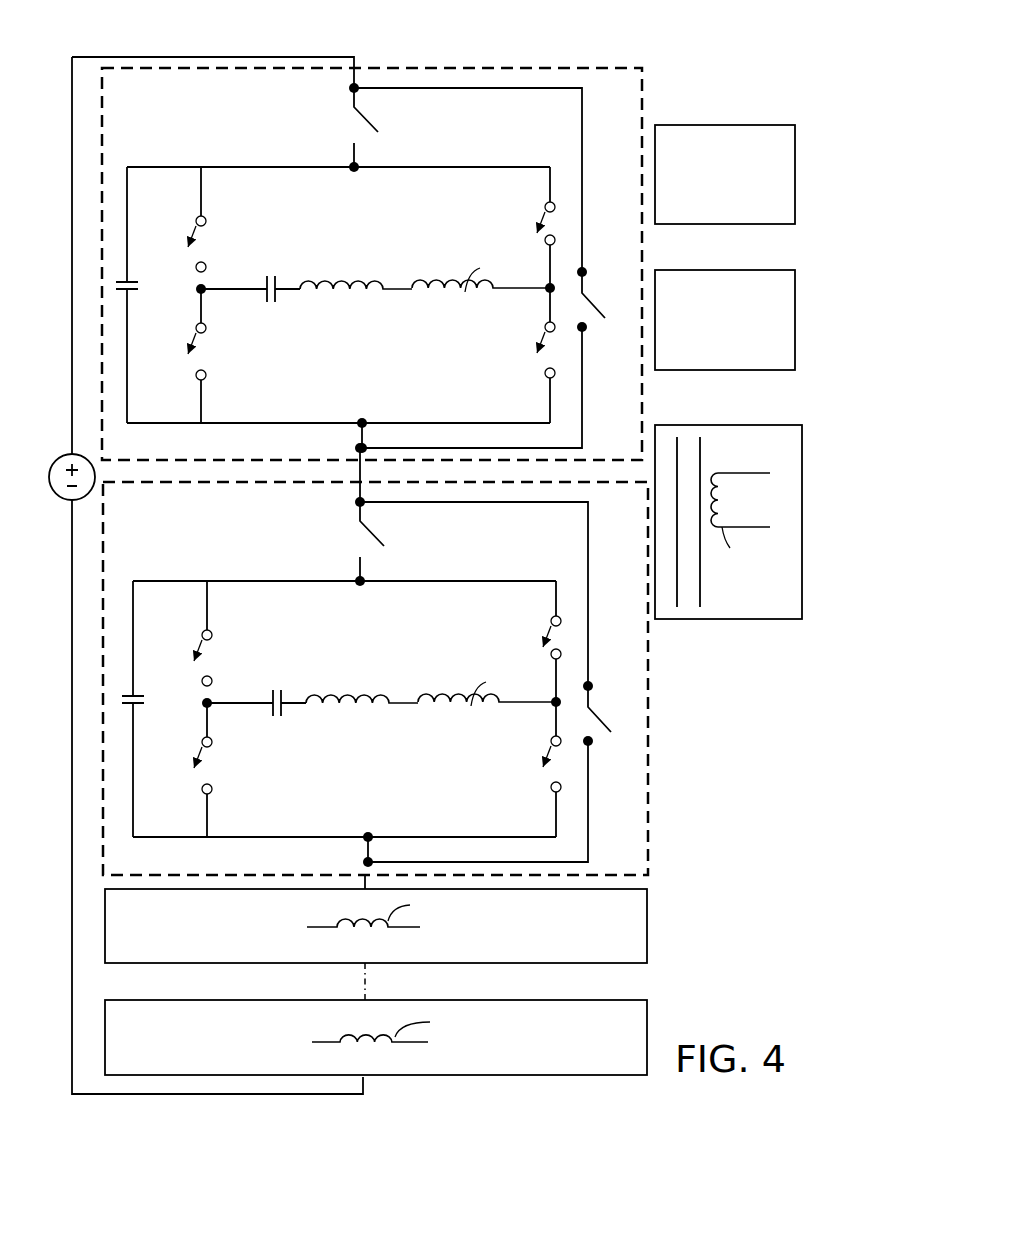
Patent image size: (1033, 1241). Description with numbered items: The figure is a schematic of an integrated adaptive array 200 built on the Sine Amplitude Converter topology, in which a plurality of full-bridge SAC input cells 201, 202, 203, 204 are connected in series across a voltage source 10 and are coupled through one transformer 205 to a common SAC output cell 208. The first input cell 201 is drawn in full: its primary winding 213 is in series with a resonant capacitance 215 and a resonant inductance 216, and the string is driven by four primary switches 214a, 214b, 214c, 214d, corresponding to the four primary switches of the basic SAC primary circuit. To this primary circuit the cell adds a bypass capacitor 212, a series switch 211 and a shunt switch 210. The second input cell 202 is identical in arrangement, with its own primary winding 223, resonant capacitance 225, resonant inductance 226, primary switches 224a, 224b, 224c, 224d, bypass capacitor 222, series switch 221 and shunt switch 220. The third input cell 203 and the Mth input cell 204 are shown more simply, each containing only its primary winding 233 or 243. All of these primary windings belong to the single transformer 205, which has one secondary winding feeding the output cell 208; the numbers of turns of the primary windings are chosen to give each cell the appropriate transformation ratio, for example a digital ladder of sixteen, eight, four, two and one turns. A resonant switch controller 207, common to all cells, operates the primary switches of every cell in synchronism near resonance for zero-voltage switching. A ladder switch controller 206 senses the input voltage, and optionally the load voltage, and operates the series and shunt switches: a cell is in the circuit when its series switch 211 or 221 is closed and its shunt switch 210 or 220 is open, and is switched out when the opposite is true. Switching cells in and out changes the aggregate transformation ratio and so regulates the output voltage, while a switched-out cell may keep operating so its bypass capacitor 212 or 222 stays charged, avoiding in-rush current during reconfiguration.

The voltage source 10 is at (56, 494).
The integrated adaptive array 200 is at (662, 38).
The full-bridge SAC input cell 201 is at (447, 67).
The full-bridge SAC input cell 202 is at (161, 483).
The full-bridge SAC input cell 203 is at (647, 912).
The full-bridge SAC input cell 204 is at (647, 1023).
The transformer 205 is at (686, 437).
The ladder switch controller 206 is at (722, 124).
The resonant switch controller 207 is at (722, 270).
The common SAC output cell 208 is at (728, 530).
The shunt switch 210 is at (596, 305).
The series switch 211 is at (372, 125).
The bypass capacitor 212 is at (143, 282).
The primary winding 213 is at (450, 298).
The primary switch 214a is at (206, 235).
The primary switch 214b is at (203, 356).
The primary switch 214c is at (510, 242).
The primary switch 214d is at (511, 355).
The resonant capacitance 215 is at (272, 270).
The resonant inductance 216 is at (337, 262).
The shunt switch 220 is at (616, 698).
The series switch 221 is at (400, 541).
The bypass capacitor 222 is at (159, 704).
The primary winding 223 is at (477, 706).
The primary switch 224a is at (212, 649).
The primary switch 224b is at (209, 770).
The primary switch 224c is at (516, 656).
The primary switch 224d is at (517, 769).
The resonant capacitance 225 is at (268, 694).
The resonant inductance 226 is at (362, 677).
The primary winding 233 is at (378, 931).
The primary winding 243 is at (391, 1048).